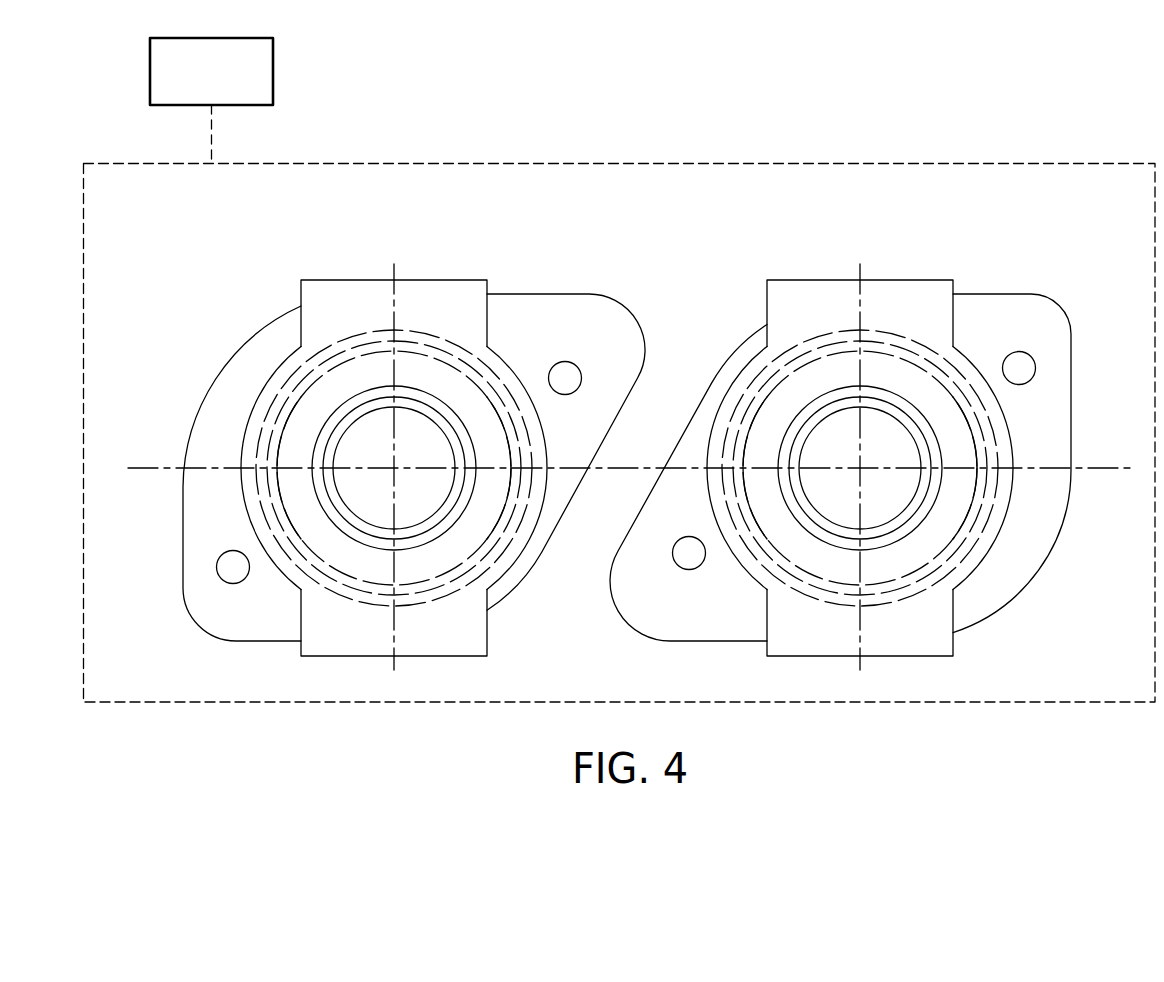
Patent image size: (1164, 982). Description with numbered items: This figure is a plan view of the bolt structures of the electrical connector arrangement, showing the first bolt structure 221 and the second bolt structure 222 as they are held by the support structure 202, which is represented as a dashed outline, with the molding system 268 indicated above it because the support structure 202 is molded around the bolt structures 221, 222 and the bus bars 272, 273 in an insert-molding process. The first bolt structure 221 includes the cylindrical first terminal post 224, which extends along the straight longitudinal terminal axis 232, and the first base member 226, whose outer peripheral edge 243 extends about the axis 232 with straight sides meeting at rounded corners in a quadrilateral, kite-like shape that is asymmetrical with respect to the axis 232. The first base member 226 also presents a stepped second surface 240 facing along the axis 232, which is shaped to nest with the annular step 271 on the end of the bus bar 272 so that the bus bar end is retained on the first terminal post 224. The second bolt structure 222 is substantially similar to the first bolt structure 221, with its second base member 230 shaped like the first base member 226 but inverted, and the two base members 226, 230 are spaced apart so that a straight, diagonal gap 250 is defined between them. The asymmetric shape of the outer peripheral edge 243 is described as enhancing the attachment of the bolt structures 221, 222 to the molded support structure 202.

The support structure 202 is at (620, 380).
The molding system 268 is at (274, 72).
The first bolt structure 221 is at (414, 474).
The second bolt structure 222 is at (840, 422).
The bus bar 272 is at (419, 418).
The bus bar 273 is at (1012, 622).
The first terminal post 224 is at (353, 442).
The terminal axis 232 is at (396, 466).
The outer peripheral edge 243 is at (183, 424).
The first base member 226 is at (376, 466).
The second base member 230 is at (840, 425).
The second surface 240 is at (387, 470).
The annular step 271 is at (394, 498).
The gap 250 is at (574, 621).